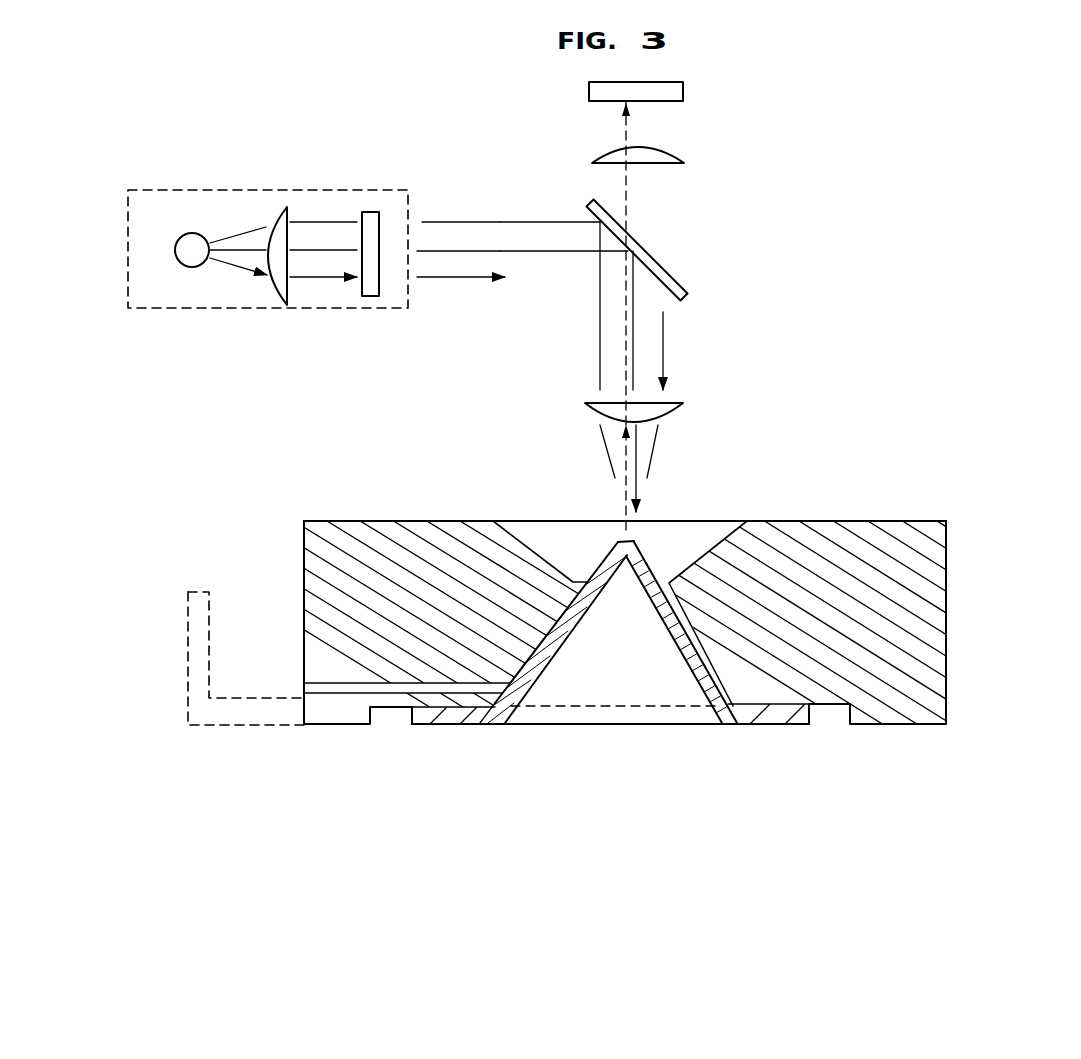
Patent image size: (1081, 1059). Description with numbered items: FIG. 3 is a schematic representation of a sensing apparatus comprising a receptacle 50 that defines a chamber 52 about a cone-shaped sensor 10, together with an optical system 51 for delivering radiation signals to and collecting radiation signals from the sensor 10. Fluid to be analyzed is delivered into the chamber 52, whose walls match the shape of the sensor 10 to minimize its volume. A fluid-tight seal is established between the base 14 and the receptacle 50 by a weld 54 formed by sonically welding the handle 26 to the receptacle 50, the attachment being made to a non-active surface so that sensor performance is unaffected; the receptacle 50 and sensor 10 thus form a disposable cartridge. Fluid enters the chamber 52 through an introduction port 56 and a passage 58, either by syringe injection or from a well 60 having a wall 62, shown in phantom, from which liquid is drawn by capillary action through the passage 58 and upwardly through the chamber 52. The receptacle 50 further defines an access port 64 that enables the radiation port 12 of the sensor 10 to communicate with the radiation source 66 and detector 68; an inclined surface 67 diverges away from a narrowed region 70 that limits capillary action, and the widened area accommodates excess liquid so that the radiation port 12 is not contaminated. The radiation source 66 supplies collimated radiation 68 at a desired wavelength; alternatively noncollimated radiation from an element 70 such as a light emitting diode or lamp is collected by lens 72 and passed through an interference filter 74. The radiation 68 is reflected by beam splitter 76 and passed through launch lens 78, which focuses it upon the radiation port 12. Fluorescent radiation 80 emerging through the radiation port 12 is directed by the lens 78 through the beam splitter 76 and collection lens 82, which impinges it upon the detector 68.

The sensor 10 is at (613, 730).
The radiation port 12 is at (636, 545).
The base 14 is at (500, 728).
The handle 26 is at (482, 727).
The receptacle 50 is at (967, 612).
The optical system 51 is at (505, 340).
The chamber 52 is at (742, 710).
The weld 54 is at (451, 722).
The introduction port 56 is at (304, 688).
The passage 58 is at (396, 688).
The well 60 is at (243, 590).
The wall 62 is at (188, 657).
The access port 64 is at (518, 522).
The radiation source 66 is at (268, 310).
The inclined surface 67 is at (722, 540).
The detector 68 is at (435, 222).
The narrowed region 70 is at (197, 233).
The lens 72 is at (287, 210).
The interference filter 74 is at (378, 212).
The beam splitter 76 is at (689, 292).
The launch lens 78 is at (683, 405).
The fluorescent radiation 80 is at (623, 510).
The collection lens 82 is at (683, 152).